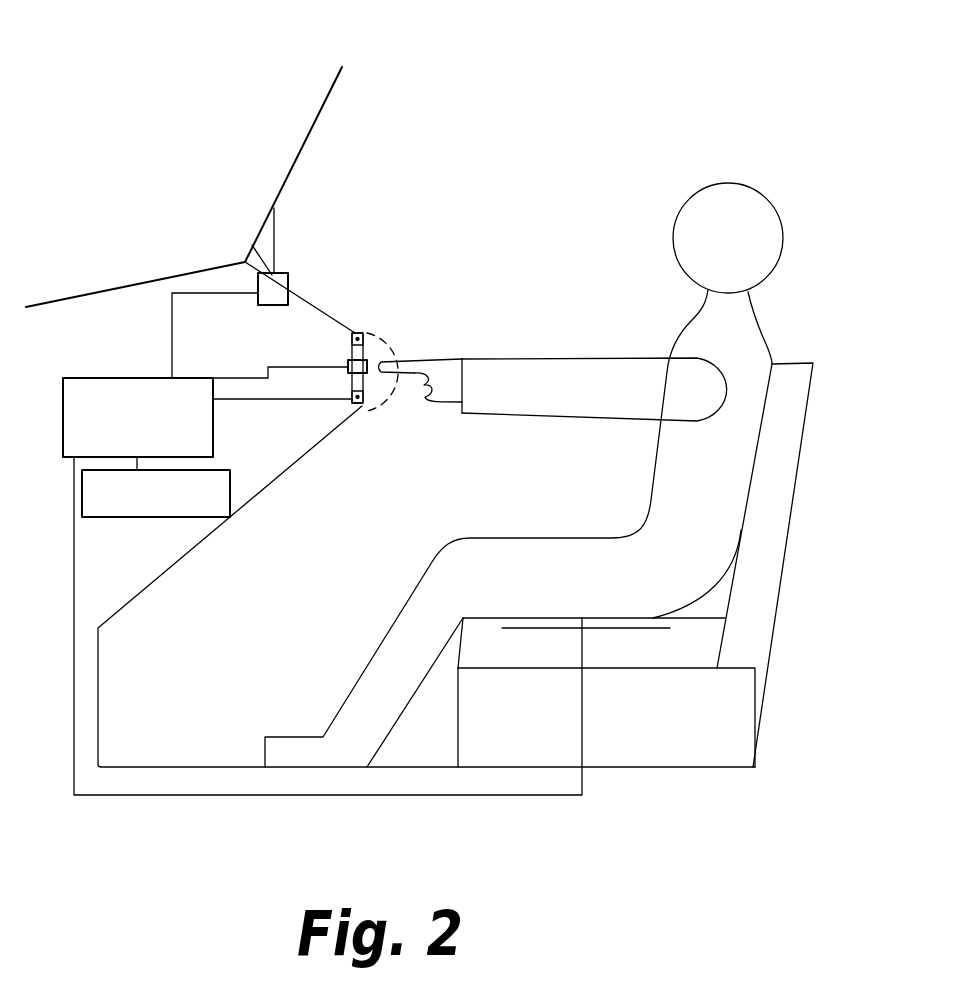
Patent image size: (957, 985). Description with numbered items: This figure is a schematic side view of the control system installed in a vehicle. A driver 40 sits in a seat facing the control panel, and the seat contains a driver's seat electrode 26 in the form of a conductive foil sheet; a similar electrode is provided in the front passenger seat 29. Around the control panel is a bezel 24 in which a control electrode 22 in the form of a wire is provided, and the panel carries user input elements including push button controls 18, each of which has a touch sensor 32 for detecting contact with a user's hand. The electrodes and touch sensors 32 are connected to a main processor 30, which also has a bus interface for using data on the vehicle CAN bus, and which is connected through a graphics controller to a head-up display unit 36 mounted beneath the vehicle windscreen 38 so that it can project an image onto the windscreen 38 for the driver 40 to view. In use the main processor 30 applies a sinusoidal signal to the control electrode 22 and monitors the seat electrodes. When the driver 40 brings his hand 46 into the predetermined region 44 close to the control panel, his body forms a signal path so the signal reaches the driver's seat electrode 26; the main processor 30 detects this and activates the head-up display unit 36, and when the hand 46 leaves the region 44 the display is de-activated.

The push button controls 18 is at (395, 344).
The control electrode 22 is at (364, 405).
The bezel 24 is at (372, 334).
The driver's seat electrode 26 is at (624, 632).
The front passenger seat 29 is at (700, 745).
The main processor 30 is at (122, 378).
The touch sensors 32 is at (348, 362).
The head-up display unit 36 is at (280, 290).
The vehicle windscreen 38 is at (302, 145).
The driver 40 is at (553, 565).
The predetermined region 44 is at (394, 402).
The hand 46 is at (440, 388).